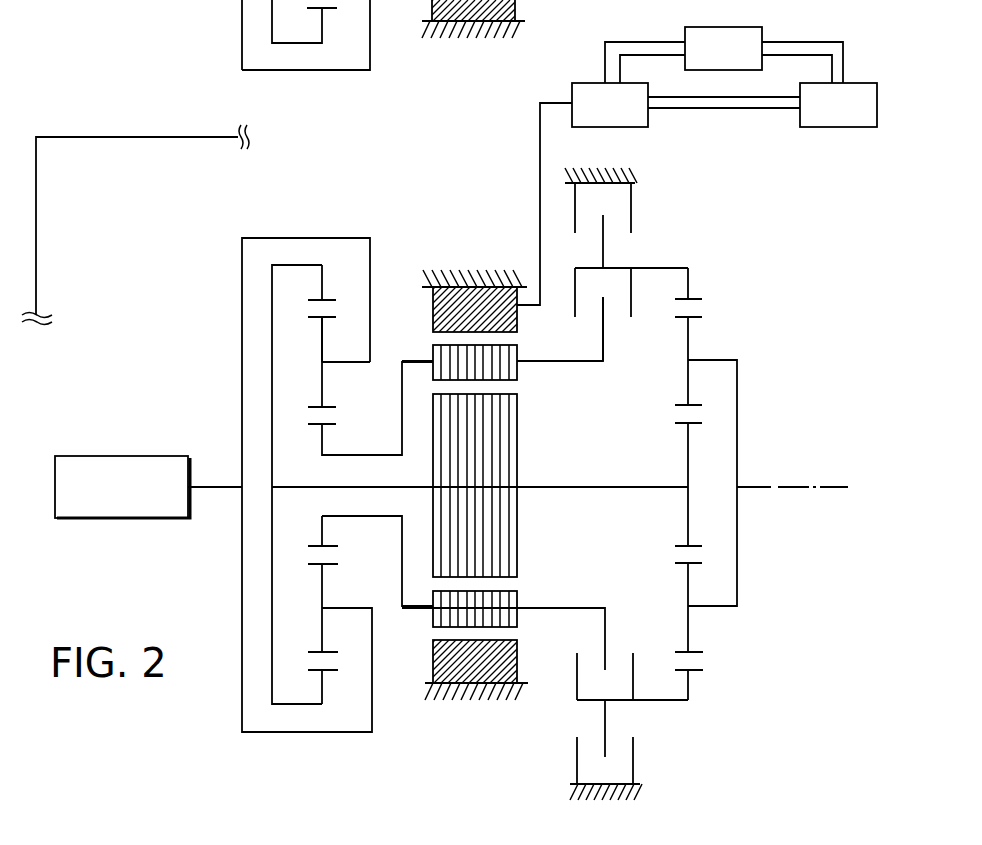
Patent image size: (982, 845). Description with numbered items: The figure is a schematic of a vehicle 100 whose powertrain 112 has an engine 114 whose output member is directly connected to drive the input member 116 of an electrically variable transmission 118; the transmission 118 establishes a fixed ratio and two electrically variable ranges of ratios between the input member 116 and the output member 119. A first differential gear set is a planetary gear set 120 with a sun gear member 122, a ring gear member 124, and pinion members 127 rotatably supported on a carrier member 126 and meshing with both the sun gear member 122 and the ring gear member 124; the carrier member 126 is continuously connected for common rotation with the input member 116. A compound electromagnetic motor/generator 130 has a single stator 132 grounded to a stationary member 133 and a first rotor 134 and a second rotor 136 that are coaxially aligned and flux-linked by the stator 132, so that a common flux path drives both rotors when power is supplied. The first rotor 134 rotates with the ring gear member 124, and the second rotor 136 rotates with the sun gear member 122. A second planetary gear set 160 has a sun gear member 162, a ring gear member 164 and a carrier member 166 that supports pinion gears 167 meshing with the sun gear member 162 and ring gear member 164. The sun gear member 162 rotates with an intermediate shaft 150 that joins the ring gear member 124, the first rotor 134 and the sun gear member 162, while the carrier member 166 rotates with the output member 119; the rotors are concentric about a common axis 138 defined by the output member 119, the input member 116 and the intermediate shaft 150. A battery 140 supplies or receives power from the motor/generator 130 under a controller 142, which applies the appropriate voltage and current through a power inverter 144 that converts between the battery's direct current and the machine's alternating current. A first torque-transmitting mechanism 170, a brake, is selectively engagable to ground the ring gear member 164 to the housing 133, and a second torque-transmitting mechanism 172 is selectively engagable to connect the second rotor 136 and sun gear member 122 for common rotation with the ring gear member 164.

The vehicle 100 is at (150, 137).
The powertrain 112 is at (357, 178).
The engine 114 is at (142, 455).
The input member 116 is at (218, 490).
The electrically variable transmission 118 is at (418, 203).
The output member 119 is at (758, 487).
The planetary gear set 120 is at (360, 570).
The sun gear member 122 is at (330, 427).
The ring gear member 124 is at (330, 298).
The carrier member 126 is at (355, 363).
The pinion members 127 is at (322, 337).
The compound electromagnetic motor/generator 130 is at (525, 589).
The stator 132 is at (517, 322).
The stationary member 133 is at (455, 270).
The first rotor 134 is at (517, 443).
The second rotor 136 is at (517, 372).
The common axis 138 is at (827, 487).
The battery 140 is at (840, 127).
The controller 142 is at (735, 27).
The power inverter 144 is at (590, 83).
The intermediate shaft 150 is at (565, 487).
The planetary gear set 160 is at (723, 640).
The sun gear member 162 is at (688, 505).
The ring gear member 164 is at (690, 290).
The carrier member 166 is at (720, 360).
The pinion gears 167 is at (688, 342).
The first torque-transmitting mechanism 170 is at (616, 226).
The second torque-transmitting mechanism 172 is at (618, 320).